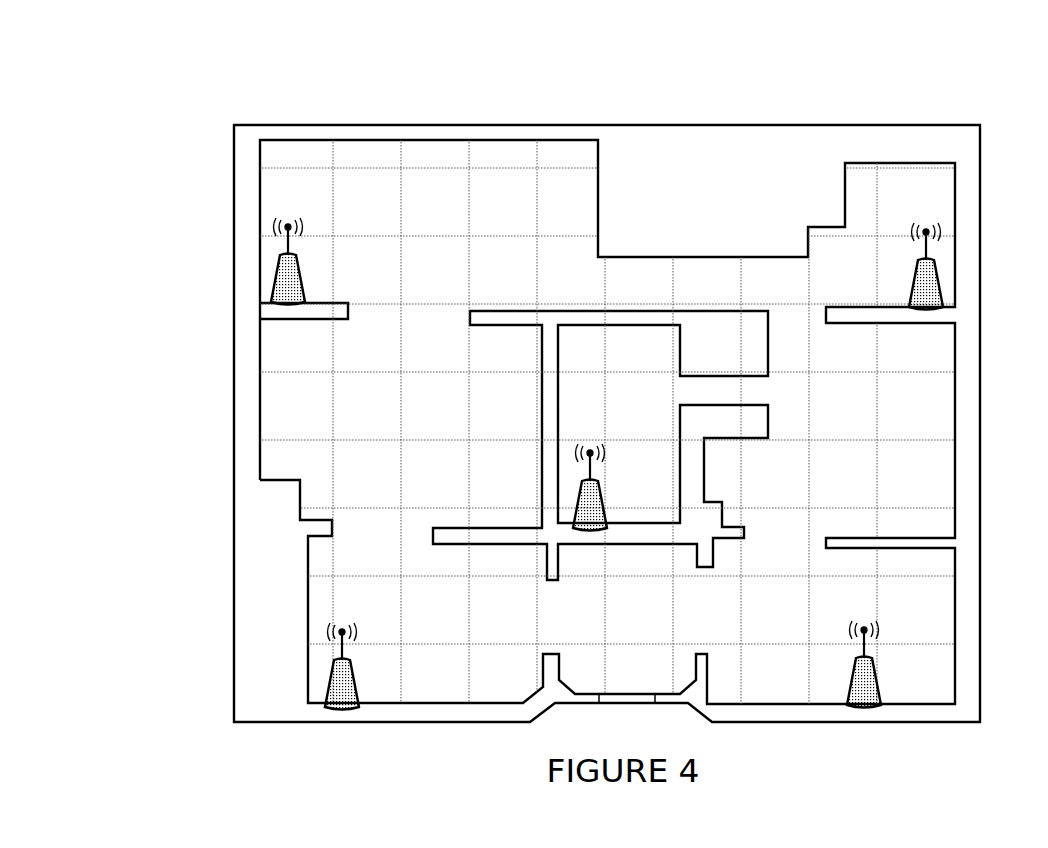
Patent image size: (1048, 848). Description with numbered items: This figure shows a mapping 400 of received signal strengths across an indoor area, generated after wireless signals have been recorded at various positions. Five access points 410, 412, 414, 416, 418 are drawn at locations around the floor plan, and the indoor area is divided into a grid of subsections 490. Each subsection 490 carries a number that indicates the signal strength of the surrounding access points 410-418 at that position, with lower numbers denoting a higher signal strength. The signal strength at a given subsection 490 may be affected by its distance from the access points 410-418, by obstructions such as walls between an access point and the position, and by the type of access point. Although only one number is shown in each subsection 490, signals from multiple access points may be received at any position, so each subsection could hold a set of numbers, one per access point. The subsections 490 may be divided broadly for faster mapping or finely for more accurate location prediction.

The mapping 400 is at (283, 113).
The subsection 490 is at (490, 190).
The access point 410 is at (283, 283).
The access point 412 is at (340, 700).
The access point 414 is at (601, 485).
The access point 416 is at (927, 290).
The access point 418 is at (857, 706).